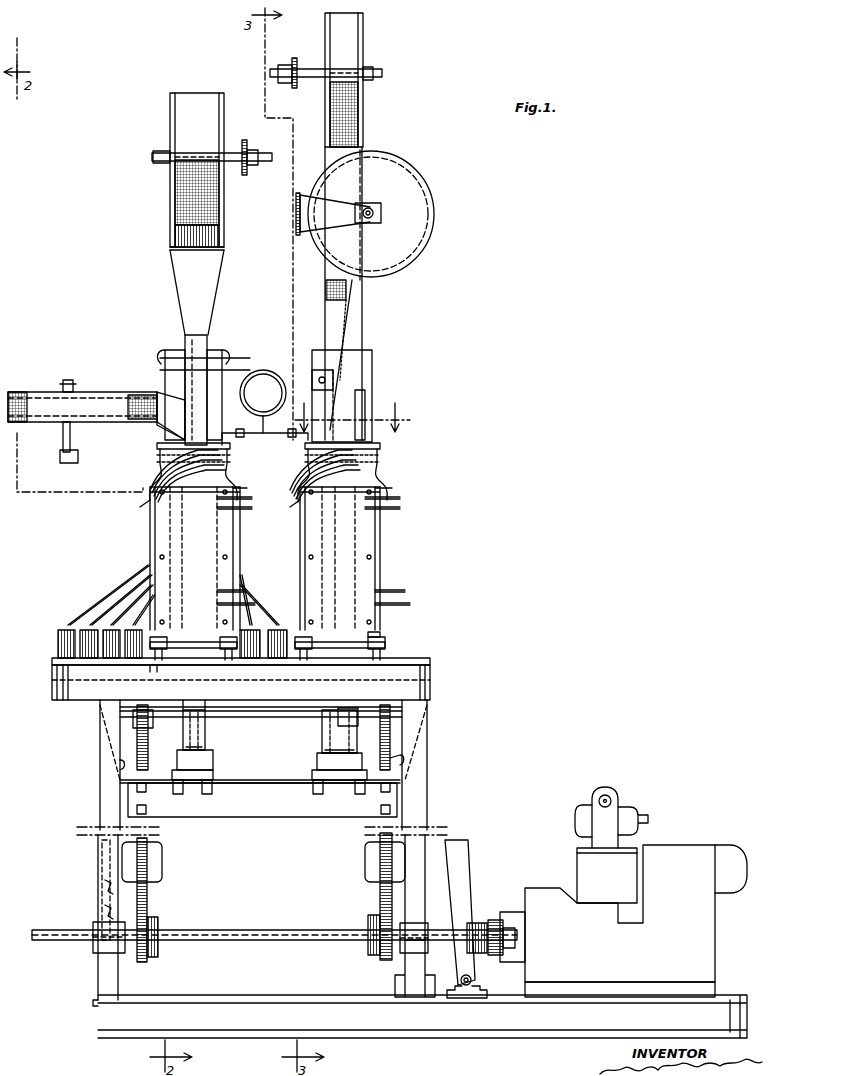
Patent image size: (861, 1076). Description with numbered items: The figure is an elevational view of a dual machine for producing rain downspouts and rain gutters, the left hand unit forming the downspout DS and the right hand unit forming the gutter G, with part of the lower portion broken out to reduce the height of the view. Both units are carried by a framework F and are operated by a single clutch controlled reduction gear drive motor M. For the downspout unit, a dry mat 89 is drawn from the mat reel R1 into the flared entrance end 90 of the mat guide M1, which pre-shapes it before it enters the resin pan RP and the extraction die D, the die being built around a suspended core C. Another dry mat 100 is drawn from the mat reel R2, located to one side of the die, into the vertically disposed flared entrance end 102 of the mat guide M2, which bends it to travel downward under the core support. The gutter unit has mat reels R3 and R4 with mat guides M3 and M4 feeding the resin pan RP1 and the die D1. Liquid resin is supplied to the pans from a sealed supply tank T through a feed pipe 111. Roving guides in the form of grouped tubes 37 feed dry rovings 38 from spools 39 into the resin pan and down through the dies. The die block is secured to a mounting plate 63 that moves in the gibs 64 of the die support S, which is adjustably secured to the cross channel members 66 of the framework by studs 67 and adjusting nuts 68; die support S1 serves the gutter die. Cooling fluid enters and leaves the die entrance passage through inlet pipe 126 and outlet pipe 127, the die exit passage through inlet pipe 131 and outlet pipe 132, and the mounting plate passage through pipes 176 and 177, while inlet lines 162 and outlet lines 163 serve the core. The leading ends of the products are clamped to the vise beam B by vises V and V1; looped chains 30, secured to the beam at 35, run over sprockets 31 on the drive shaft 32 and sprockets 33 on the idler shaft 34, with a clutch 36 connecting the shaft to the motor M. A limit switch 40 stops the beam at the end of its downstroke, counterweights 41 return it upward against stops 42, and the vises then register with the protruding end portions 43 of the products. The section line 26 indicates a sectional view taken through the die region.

The mat reel R1 is at (170, 193).
The mat reel R2 is at (30, 388).
The mat reel R3 is at (364, 40).
The mat reel R4 is at (433, 202).
The mat guide M1 is at (172, 275).
The mat guide M2 is at (160, 430).
The mat guide M3 is at (350, 333).
The mat guide M4 is at (364, 395).
The dry mat 89 is at (180, 232).
The flared entrance end 90 is at (183, 249).
The suspended core C is at (182, 330).
The supply tank T is at (263, 372).
The dry mat 100 is at (135, 396).
The flared entrance end 102 is at (175, 395).
The inlet lines 162 is at (165, 352).
The outlet lines 163 is at (236, 346).
The mounting plate 63 is at (165, 372).
The feed pipe 111 is at (236, 420).
The section line 26 is at (352, 410).
The resin pan RP is at (165, 457).
The resin pan RP1 is at (380, 462).
The roving guides 37 is at (147, 478).
The inlet pipe 176 is at (140, 507).
The outlet pipe 177 is at (258, 480).
The inlet pipe 126 is at (323, 493).
The outlet pipe 127 is at (324, 510).
The gibs 64 is at (155, 530).
The extraction die D is at (195, 558).
The extraction die D1 is at (340, 558).
The outlet pipe 132 is at (245, 590).
The inlet pipe 131 is at (255, 603).
The dry rovings 38 is at (100, 626).
The spools 39 is at (58, 637).
The die support S1 is at (385, 647).
The adjusting nuts 68 is at (380, 634).
The cross channel members 66 is at (160, 680).
The studs 67 is at (150, 667).
The die support S is at (178, 648).
The framework F is at (427, 758).
The idler shaft 34 is at (260, 714).
The sprockets 33 is at (137, 730).
The downspout DS is at (205, 725).
The gutter G is at (335, 727).
The vise V is at (213, 762).
The vise V1 is at (317, 769).
The protruding end portions 43 is at (205, 748).
The stops 42 is at (130, 764).
The chain attachment points 35 is at (135, 800).
The vise beam B is at (238, 822).
The limit switch 40 is at (130, 887).
The counterweights 41 is at (162, 862).
The looped chains 30 is at (148, 892).
The sprockets 31 is at (158, 922).
The drive shaft 32 is at (258, 942).
The clutch 36 is at (490, 920).
The drive motor M is at (630, 806).